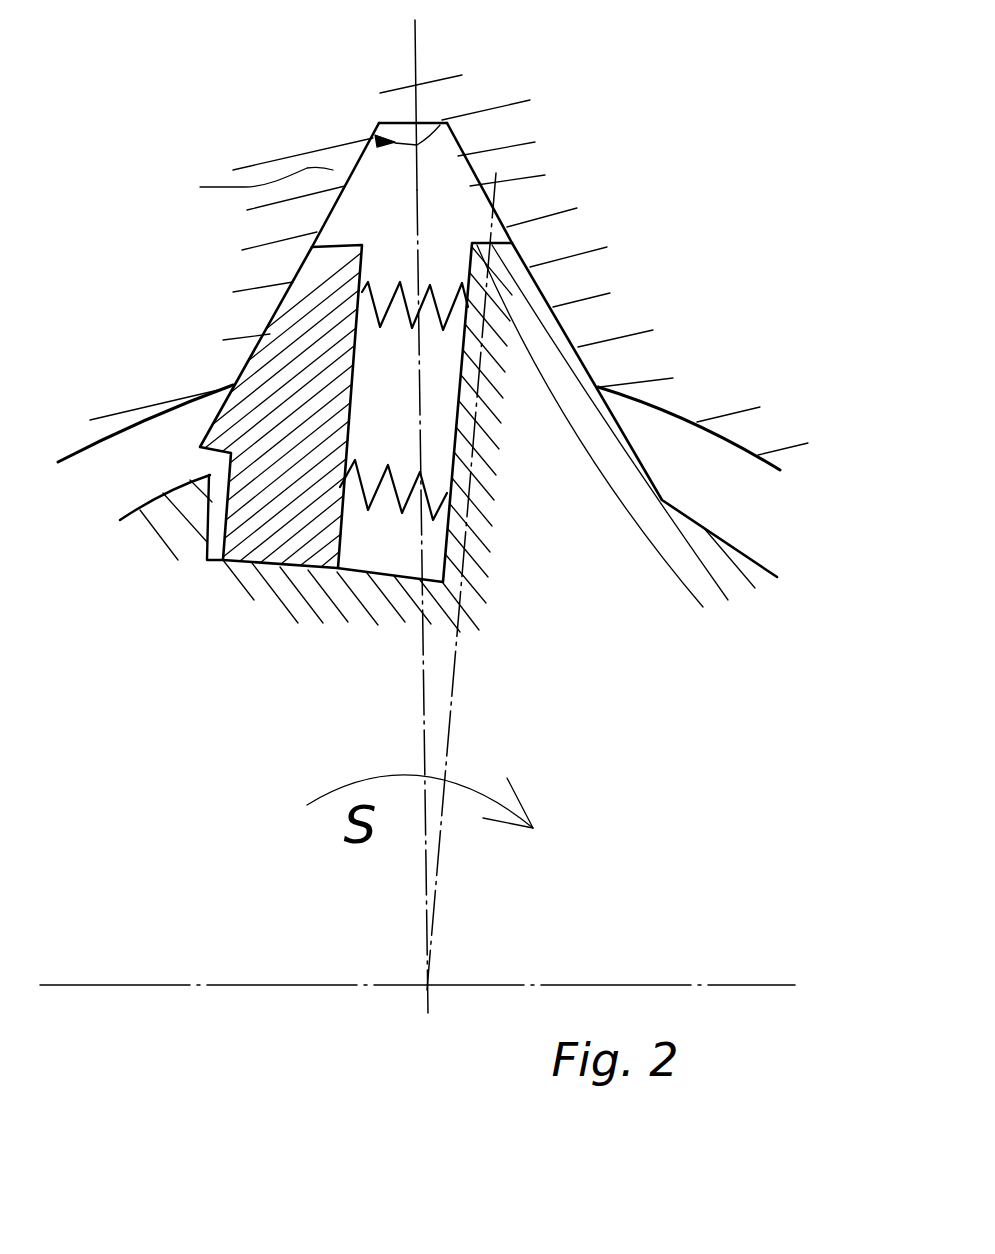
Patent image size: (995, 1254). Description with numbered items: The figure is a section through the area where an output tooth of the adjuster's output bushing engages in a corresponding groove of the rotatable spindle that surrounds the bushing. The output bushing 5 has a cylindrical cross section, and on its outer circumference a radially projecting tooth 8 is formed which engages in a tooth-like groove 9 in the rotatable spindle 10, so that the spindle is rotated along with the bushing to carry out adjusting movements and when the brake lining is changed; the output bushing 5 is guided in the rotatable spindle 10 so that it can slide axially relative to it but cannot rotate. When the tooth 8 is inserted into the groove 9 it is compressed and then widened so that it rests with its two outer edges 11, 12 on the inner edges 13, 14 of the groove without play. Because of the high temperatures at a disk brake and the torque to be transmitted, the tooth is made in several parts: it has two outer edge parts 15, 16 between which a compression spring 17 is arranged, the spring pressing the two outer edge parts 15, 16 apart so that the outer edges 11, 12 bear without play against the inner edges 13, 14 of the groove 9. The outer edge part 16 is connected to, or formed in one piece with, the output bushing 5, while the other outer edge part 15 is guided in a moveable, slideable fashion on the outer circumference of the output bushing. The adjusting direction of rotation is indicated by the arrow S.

The output bushing 5 is at (183, 507).
The tooth 8 is at (347, 637).
The groove 9 is at (463, 208).
The rotatable spindle 10 is at (200, 187).
The outer edge 11 is at (247, 357).
The outer edge 12 is at (588, 360).
The inner edge 13 is at (450, 157).
The inner edge 14 is at (442, 120).
The outer edge part 15 is at (297, 332).
The outer edge part 16 is at (519, 388).
The compression spring 17 is at (383, 283).